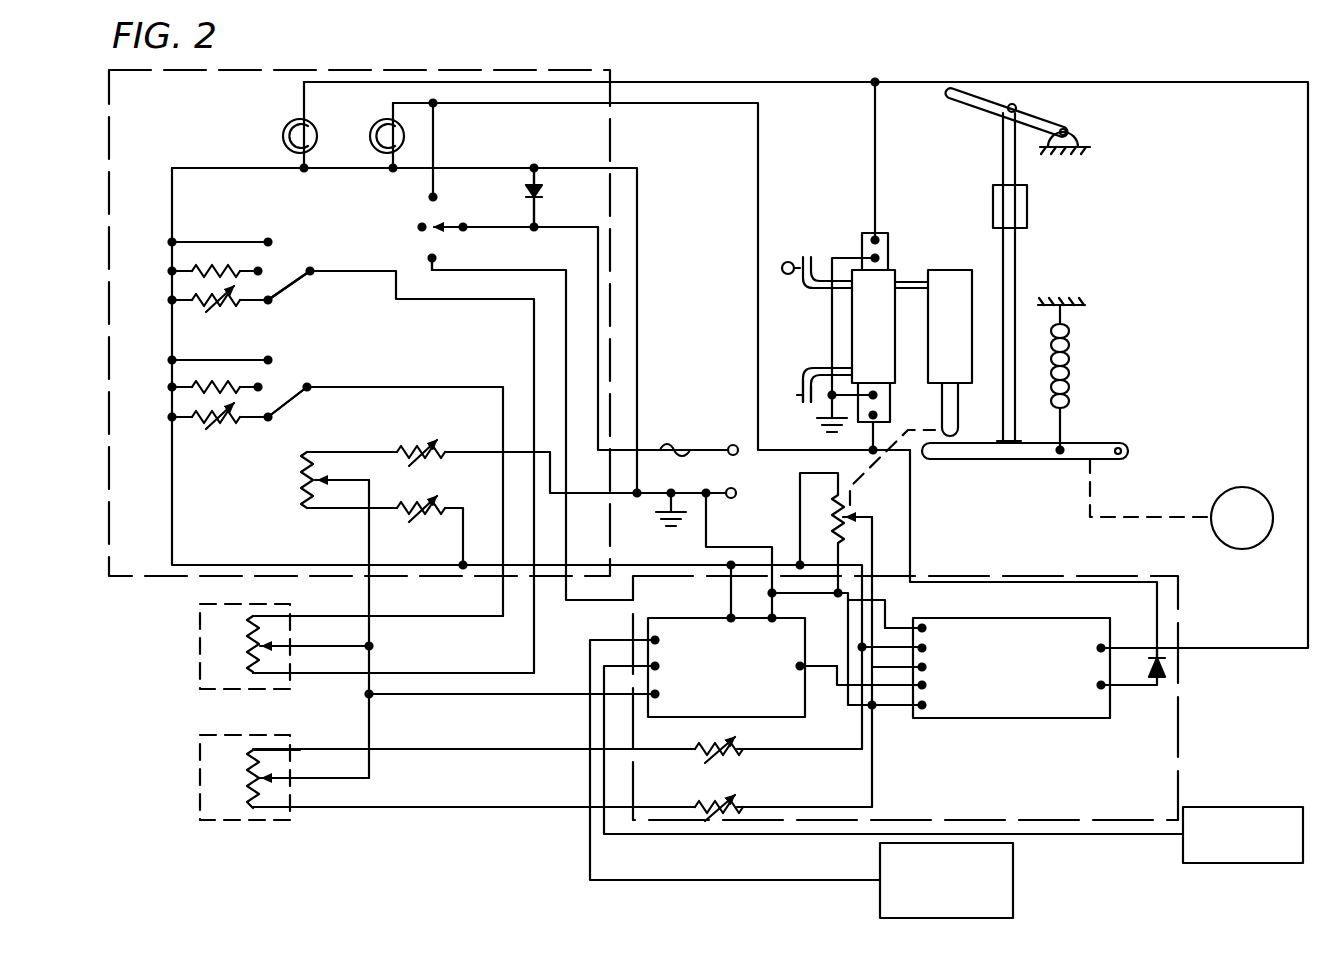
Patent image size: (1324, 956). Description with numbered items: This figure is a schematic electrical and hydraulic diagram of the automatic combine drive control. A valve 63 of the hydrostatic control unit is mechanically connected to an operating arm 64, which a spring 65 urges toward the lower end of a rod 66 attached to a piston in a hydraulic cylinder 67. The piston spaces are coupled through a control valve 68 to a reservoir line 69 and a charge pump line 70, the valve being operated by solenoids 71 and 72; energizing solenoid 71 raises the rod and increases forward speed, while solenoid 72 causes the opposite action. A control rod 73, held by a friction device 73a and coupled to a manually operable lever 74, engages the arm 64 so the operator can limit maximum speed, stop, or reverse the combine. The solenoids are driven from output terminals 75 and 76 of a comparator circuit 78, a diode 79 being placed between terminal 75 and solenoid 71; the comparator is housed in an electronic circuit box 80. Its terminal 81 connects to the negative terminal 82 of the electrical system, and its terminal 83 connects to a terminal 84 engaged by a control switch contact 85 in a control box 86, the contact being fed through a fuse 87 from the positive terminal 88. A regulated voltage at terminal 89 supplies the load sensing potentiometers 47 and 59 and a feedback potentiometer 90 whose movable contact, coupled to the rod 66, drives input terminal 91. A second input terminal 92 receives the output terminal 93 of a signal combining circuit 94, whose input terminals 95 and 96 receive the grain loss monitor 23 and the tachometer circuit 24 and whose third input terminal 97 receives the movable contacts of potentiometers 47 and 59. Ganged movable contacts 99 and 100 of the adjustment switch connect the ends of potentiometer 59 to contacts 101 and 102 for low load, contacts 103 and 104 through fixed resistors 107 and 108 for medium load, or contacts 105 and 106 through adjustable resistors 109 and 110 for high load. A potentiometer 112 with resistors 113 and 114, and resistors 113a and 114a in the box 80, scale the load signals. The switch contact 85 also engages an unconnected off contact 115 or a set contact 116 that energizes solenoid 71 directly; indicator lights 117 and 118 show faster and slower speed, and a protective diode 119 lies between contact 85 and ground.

The grain loss monitor 23 is at (1015, 866).
The tachometer circuit 24 is at (1183, 855).
The load sensing potentiometer 47 is at (248, 778).
The load sensing potentiometer 59 is at (248, 646).
The valve 63 is at (1264, 494).
The operating arm 64 is at (978, 462).
The spring 65 is at (1072, 380).
The rod 66 is at (958, 408).
The hydraulic cylinder 67 is at (948, 278).
The control valve 68 is at (886, 280).
The line 69 is at (788, 393).
The line 70 is at (778, 269).
The solenoid 71 is at (890, 414).
The solenoid 72 is at (862, 236).
The control rod 73 is at (1016, 270).
The friction device 73a is at (1028, 206).
The manually operable lever 74 is at (1000, 104).
The output terminal 75 is at (1106, 690).
The output terminal 76 is at (1106, 650).
The comparator circuit 78 is at (1042, 720).
The diode 79 is at (1164, 670).
The electronic circuit box 80 is at (1182, 768).
The terminal 81 is at (920, 708).
The negative terminal 82 is at (731, 498).
The terminal 83 is at (922, 626).
The terminal 84 is at (429, 258).
The control switch contact 85 is at (458, 229).
The control box 86 is at (104, 362).
The fuse 87 is at (676, 448).
The positive terminal 88 is at (734, 446).
The terminal 89 is at (924, 646).
The feedback potentiometer 90 is at (844, 516).
The input terminal 91 is at (926, 670).
The second input terminal 92 is at (926, 688).
The output terminal 93 is at (803, 666).
The signal combining circuit 94 is at (710, 618).
The input terminal 95 is at (652, 640).
The input terminal 96 is at (652, 666).
The third input terminal 97 is at (652, 697).
The movable contact 99 is at (292, 282).
The movable contact 100 is at (290, 400).
The contact 101 is at (268, 240).
The contact 102 is at (268, 357).
The contact 103 is at (258, 268).
The contact 104 is at (258, 384).
The contact 105 is at (262, 304).
The contact 106 is at (272, 416).
The fixed resistor 107 is at (192, 270).
The fixed resistor 108 is at (192, 386).
The adjustable resistor 109 is at (192, 302).
The adjustable resistor 110 is at (198, 418).
The potentiometer 112 is at (300, 480).
The resistor 113 is at (404, 448).
The resistor 113a is at (740, 806).
The resistor 114 is at (404, 511).
The resistor 114a is at (738, 754).
The intermediate unconnected contact 115 is at (419, 227).
The third contact 116 is at (430, 197).
The indicator light 117 is at (372, 128).
The indicator light 118 is at (284, 128).
The protective diode 119 is at (542, 192).